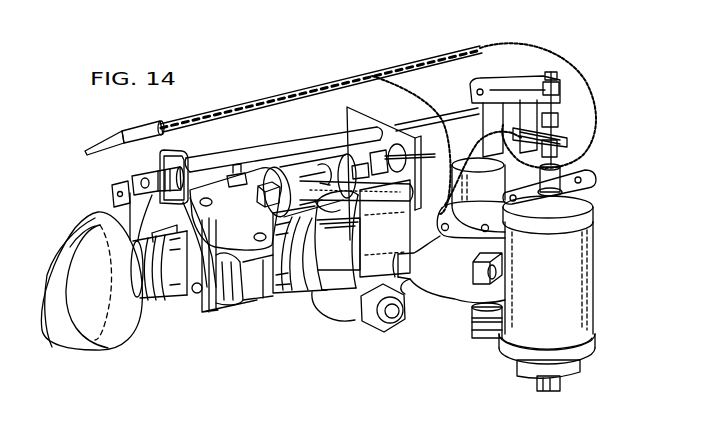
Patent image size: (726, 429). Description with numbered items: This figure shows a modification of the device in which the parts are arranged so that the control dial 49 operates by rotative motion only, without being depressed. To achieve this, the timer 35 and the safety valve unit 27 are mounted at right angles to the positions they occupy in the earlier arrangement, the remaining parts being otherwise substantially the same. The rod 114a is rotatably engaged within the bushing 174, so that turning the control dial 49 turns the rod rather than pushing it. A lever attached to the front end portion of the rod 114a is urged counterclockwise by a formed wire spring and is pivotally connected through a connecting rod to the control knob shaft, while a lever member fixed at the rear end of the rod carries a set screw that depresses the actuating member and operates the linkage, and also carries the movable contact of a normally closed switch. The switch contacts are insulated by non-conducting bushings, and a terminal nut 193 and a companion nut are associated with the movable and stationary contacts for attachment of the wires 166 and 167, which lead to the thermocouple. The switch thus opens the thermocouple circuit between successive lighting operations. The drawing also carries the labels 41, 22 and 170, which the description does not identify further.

The choke cable 41 is at (121, 139).
The control dial 49 is at (120, 334).
The bushing 174 is at (303, 150).
The rod 114a is at (410, 123).
The wire 167 is at (421, 90).
The wire 166 is at (592, 98).
The terminal nut 193 is at (512, 128).
The solenoid 170 is at (445, 205).
The solenoid coil 22 is at (293, 262).
The safety valve unit 27 is at (450, 281).
The timer 35 is at (551, 274).